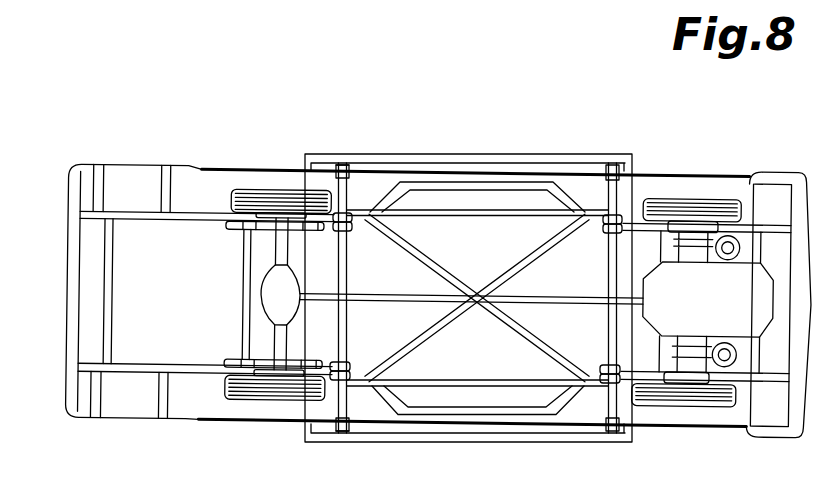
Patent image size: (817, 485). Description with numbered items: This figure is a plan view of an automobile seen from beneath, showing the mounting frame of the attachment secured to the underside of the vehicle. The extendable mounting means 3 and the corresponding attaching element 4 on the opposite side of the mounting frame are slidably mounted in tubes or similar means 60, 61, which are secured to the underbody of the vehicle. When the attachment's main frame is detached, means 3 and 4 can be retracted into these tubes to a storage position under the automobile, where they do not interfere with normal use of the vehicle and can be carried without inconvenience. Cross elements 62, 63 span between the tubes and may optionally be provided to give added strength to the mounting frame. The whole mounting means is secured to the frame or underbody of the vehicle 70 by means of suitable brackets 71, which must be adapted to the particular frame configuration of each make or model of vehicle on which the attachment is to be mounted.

The extendable mounting means 3 is at (342, 423).
The attaching element 4 is at (343, 162).
The tube 60 is at (613, 198).
The tube 61 is at (345, 288).
The cross element 62 is at (465, 380).
The cross element 63 is at (498, 213).
The frame or underbody of the vehicle 70 is at (415, 182).
The bracket 71 is at (350, 229).